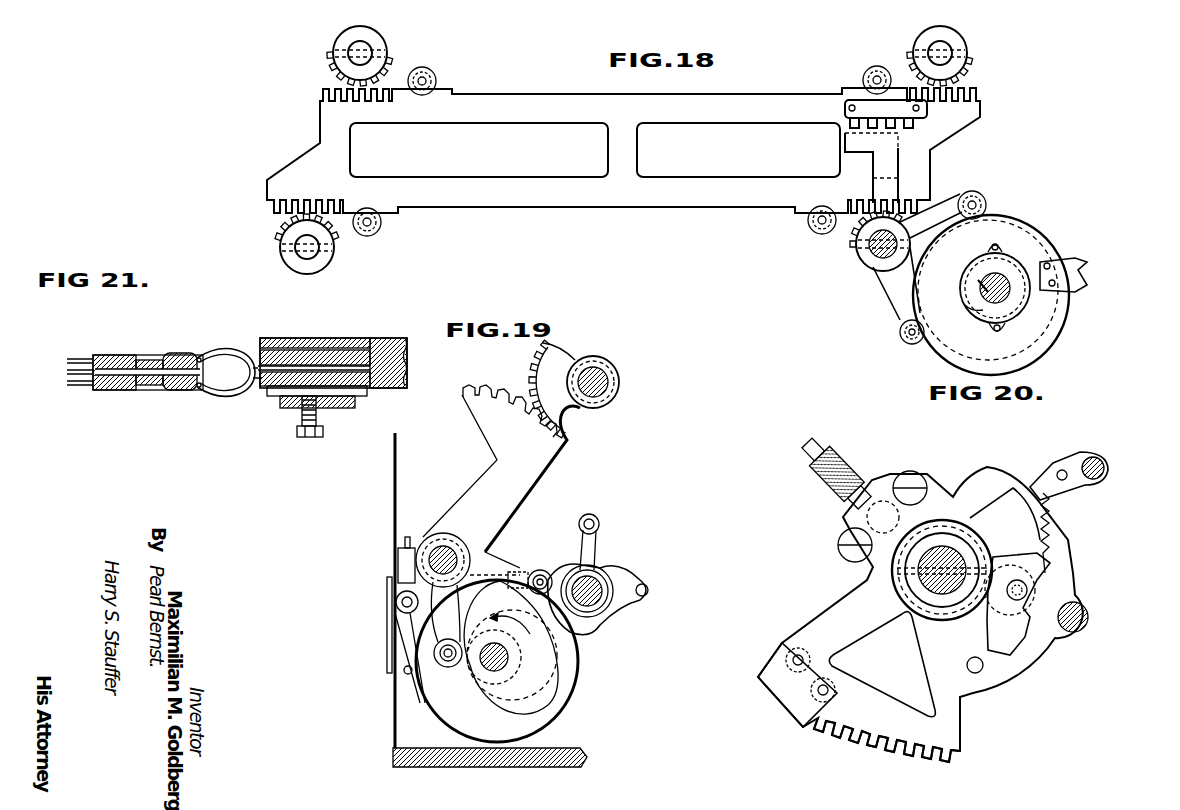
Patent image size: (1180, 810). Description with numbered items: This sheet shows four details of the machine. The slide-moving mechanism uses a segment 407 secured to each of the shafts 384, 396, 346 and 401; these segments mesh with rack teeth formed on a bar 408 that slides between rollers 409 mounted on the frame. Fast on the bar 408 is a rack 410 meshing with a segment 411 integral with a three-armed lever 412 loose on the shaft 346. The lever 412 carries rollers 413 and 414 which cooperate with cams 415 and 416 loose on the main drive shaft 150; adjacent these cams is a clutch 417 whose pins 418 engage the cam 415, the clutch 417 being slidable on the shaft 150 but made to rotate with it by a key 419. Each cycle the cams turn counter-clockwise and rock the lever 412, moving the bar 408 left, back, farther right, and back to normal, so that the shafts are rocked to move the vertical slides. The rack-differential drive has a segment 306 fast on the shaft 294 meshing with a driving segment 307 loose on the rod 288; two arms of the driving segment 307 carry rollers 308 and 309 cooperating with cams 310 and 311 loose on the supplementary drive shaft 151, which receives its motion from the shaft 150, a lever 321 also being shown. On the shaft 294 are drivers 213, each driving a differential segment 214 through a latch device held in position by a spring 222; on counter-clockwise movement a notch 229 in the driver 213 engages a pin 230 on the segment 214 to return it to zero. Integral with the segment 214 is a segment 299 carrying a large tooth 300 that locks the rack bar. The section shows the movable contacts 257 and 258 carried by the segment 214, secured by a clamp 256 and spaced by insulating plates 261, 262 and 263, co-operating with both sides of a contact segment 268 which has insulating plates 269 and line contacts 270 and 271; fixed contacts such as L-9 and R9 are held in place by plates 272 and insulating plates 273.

In FIG. 18, the bar 408 is at (537, 200).
In FIG. 18, the segment 407 is at (330, 83).
In FIG. 18, the rollers 409 is at (436, 80).
In FIG. 18, the shaft 396 is at (352, 55).
In FIG. 18, the shaft 384 is at (925, 48).
In FIG. 18, the shaft 401 is at (312, 252).
In FIG. 18, the rack 410 is at (845, 110).
In FIG. 18, the segment 411 is at (868, 152).
In FIG. 18, the shaft 346 is at (870, 250).
In FIG. 18, the three-armed lever 412 is at (885, 287).
In FIG. 18, the roller 413 is at (900, 333).
In FIG. 18, the roller 414 is at (972, 192).
In FIG. 18, the cam 415 is at (1050, 345).
In FIG. 18, the cam 416 is at (1078, 308).
In FIG. 18, the clutch 417 is at (982, 318).
In FIG. 18, the pins 418 is at (991, 246).
In FIG. 18, the key 419 is at (985, 278).
In FIG. 18, the main drive shaft 150 is at (1010, 300).
In FIG. 19, the shaft 294 is at (595, 392).
In FIG. 20, the shaft 294 is at (950, 550).
In FIG. 19, the segment 306 is at (537, 370).
In FIG. 19, the driving segment 307 is at (478, 424).
In FIG. 19, the rod 288 is at (447, 550).
In FIG. 19, the roller 308 is at (544, 572).
In FIG. 19, the roller 309 is at (455, 668).
In FIG. 19, the cam 310 is at (560, 690).
In FIG. 19, the cam 311 is at (552, 655).
In FIG. 19, the supplementary drive shaft 151 is at (500, 670).
In FIG. 19, the lever 321 is at (598, 600).
In FIG. 21, the contact segment 268 is at (67, 369).
In FIG. 21, the insulating plate 269 is at (85, 358).
In FIG. 21, the fixed contact R9 is at (77, 359).
In FIG. 21, the fixed contact L-9 is at (92, 385).
In FIG. 21, the plates 272 is at (120, 356).
In FIG. 21, the insulating plates 273 is at (142, 357).
In FIG. 21, the movable contact 257 is at (168, 390).
In FIG. 21, the movable contact 258 is at (177, 353).
In FIG. 20, the movable contact 258 is at (812, 452).
In FIG. 21, the line contact 271 is at (202, 357).
In FIG. 21, the line contact 270 is at (202, 388).
In FIG. 21, the insulating plate 263 is at (258, 376).
In FIG. 21, the insulating plate 262 is at (260, 348).
In FIG. 21, the differential segment 214 is at (338, 338).
In FIG. 20, the differential segment 214 is at (1075, 457).
In FIG. 21, the insulating plate 261 is at (360, 388).
In FIG. 21, the clamp 256 is at (272, 408).
In FIG. 20, the driver 213 is at (966, 480).
In FIG. 20, the segment 299 is at (957, 733).
In FIG. 20, the spring 222 is at (1070, 505).
In FIG. 20, the notch 229 is at (972, 640).
In FIG. 20, the pin 230 is at (1020, 580).
In FIG. 20, the large tooth 300 is at (768, 668).